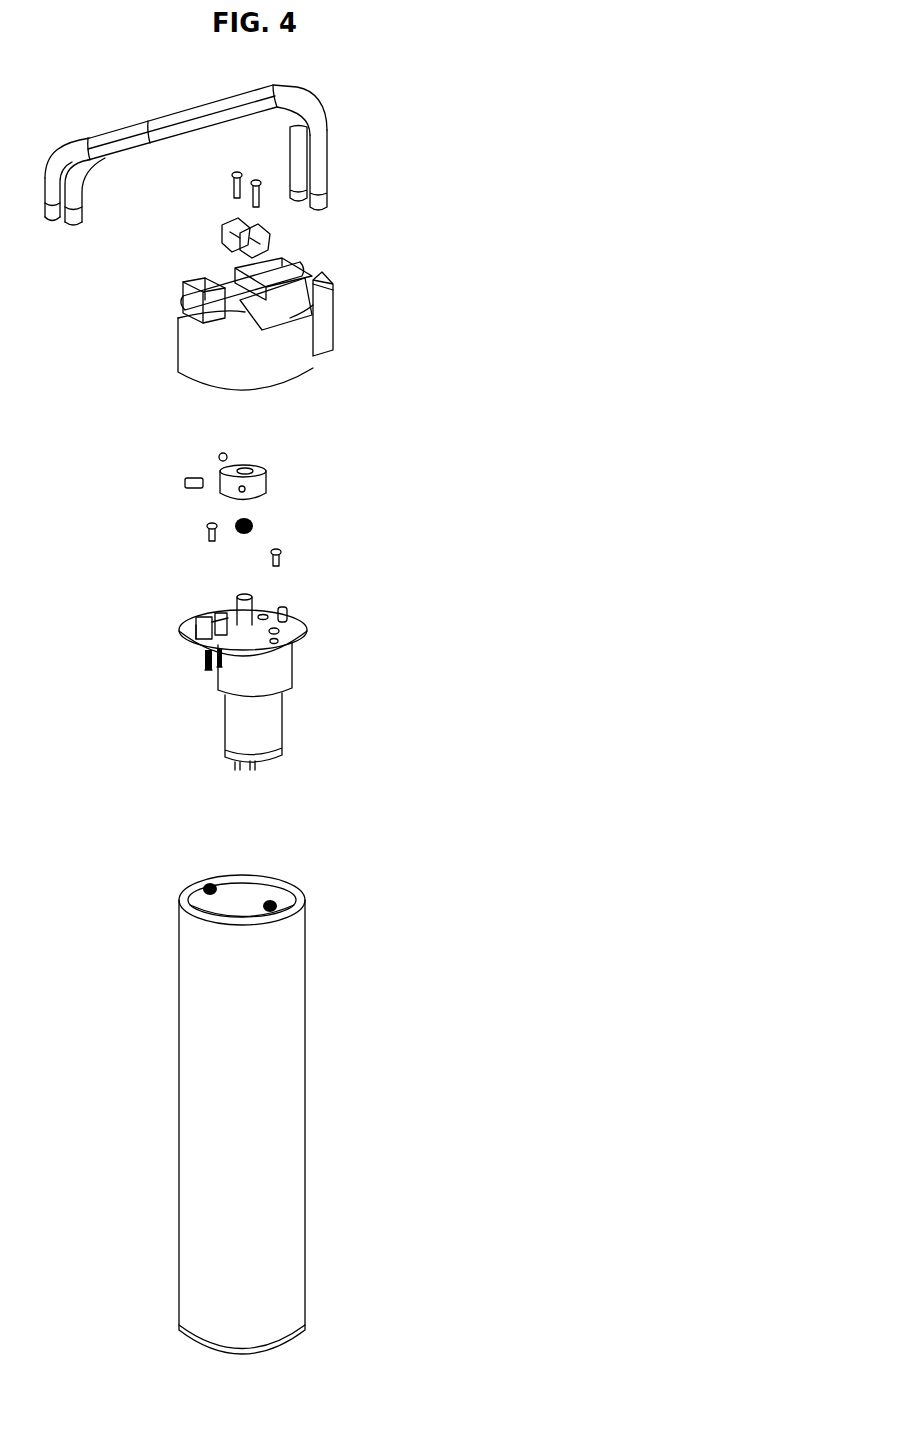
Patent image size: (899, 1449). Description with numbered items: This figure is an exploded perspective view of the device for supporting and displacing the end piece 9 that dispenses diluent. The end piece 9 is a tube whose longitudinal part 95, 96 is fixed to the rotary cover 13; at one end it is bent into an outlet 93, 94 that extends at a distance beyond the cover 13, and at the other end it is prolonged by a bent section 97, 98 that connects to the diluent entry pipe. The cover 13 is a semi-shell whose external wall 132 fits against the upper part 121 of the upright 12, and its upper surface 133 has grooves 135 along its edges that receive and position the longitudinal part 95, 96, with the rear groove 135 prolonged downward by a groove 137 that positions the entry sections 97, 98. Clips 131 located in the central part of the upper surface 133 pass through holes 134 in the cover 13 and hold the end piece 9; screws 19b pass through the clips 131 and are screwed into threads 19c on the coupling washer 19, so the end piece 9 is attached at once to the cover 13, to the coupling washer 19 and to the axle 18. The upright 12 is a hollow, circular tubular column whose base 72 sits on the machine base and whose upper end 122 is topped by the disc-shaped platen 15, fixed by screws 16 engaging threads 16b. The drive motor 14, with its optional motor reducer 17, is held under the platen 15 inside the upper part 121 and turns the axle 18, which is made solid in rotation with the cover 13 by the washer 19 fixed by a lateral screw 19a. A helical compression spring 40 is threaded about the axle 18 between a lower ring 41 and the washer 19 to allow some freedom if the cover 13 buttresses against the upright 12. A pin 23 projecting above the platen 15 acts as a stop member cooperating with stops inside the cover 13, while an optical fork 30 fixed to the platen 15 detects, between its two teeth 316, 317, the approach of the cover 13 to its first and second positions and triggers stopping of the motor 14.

The end piece 9 is at (348, 80).
The rotary cover 13 is at (514, 180).
The upright 12 is at (245, 1083).
The drive motor 14 is at (268, 723).
The platen 15 is at (302, 618).
The attachment means 16 is at (208, 527).
The threads 16b is at (210, 882).
The motor reducer 17 is at (275, 667).
The axle 18 is at (225, 608).
The coupling washer 19 is at (270, 492).
The lateral screw 19a is at (192, 478).
The screws 19b is at (252, 216).
The threads 19c is at (232, 460).
The stop member 23 is at (288, 605).
The approach detection means 30 is at (200, 622).
The elastic means 40 is at (254, 524).
The lower ring 41 is at (247, 653).
The base of the upright 72 is at (288, 1325).
The outlet 93 is at (58, 218).
The outlet 94 is at (70, 224).
The longitudinal part 95 is at (176, 121).
The longitudinal part 96 is at (150, 140).
The bent section 97 is at (297, 163).
The bent section 98 is at (317, 168).
The upper part of the upright 121 is at (296, 932).
The upper end of the upright 122 is at (187, 897).
The clips 131 is at (227, 228).
The external wall 132 is at (290, 357).
The upper surface of the cover 133 is at (337, 311).
The holes 134 is at (250, 300).
The grooves 135 is at (328, 266).
The groove 137 is at (343, 326).
The tooth of the fork 316 is at (212, 608).
The tooth of the fork 317 is at (220, 610).